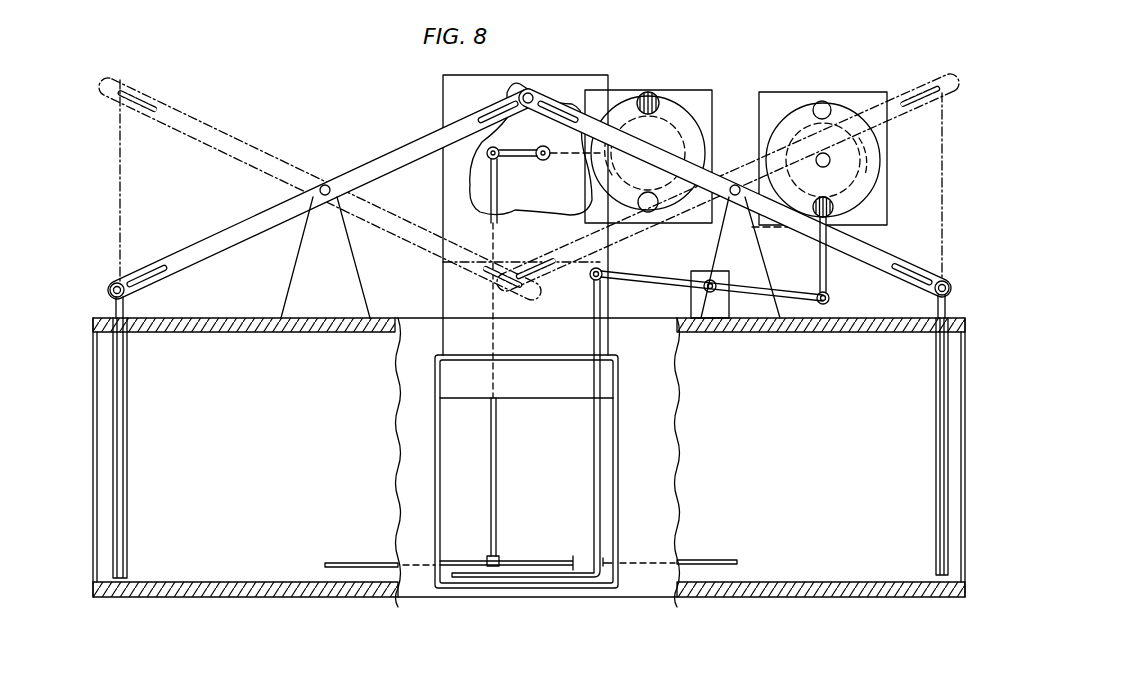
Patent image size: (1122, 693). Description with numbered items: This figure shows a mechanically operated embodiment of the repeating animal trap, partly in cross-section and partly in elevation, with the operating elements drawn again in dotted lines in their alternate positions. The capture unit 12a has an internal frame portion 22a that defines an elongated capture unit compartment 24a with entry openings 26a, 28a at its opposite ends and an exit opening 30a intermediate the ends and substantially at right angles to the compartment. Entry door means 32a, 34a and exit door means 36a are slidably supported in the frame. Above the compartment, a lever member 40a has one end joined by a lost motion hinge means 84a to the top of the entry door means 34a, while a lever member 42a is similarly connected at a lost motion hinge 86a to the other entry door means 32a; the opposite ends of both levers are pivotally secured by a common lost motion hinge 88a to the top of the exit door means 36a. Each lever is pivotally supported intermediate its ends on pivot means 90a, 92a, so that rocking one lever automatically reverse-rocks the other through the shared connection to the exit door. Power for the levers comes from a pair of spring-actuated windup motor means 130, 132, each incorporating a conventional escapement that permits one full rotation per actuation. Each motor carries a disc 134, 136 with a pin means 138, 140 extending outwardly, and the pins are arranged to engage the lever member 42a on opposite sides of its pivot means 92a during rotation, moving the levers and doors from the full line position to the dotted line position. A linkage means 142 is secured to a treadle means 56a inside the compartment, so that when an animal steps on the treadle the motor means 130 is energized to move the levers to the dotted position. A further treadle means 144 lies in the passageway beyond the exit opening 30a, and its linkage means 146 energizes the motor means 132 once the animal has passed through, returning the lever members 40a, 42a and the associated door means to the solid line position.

The capture unit 12a is at (166, 616).
The internal frame portion 22a is at (230, 598).
The capture unit compartment 24a is at (822, 455).
The entry opening 26a is at (957, 466).
The entry opening 28a is at (96, 450).
The exit opening 30a is at (452, 446).
The entry door means 32a is at (948, 190).
The entry door means 34a is at (124, 186).
The exit door means 36a is at (443, 195).
The lever member 40a is at (223, 236).
The lever member 42a is at (869, 264).
The treadle means 56a is at (353, 562).
The lost motion hinge means 84a is at (111, 284).
The lost motion hinge 86a is at (948, 282).
The common lost motion hinge 88a is at (530, 93).
The pivot means 90a is at (328, 184).
The pivot means 92a is at (735, 184).
The spring-actuated windup motor means 130 is at (688, 92).
The spring-actuated windup motor means 132 is at (836, 102).
The disc 134 is at (692, 110).
The disc 136 is at (792, 114).
The pin means 138 is at (648, 91).
The pin means 140 is at (834, 206).
The linkage means 142 is at (498, 203).
The treadle means 144 is at (530, 580).
The linkage means 146 is at (818, 272).